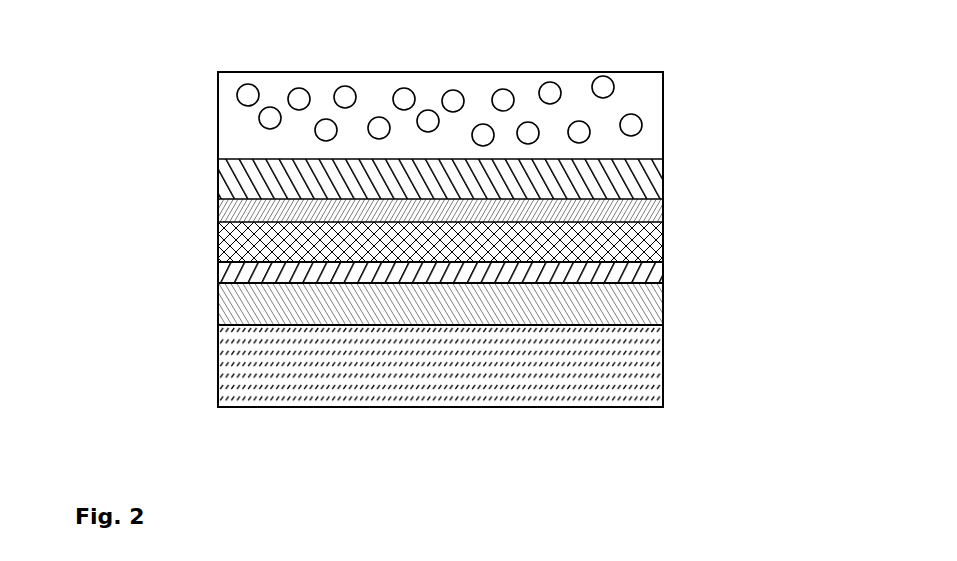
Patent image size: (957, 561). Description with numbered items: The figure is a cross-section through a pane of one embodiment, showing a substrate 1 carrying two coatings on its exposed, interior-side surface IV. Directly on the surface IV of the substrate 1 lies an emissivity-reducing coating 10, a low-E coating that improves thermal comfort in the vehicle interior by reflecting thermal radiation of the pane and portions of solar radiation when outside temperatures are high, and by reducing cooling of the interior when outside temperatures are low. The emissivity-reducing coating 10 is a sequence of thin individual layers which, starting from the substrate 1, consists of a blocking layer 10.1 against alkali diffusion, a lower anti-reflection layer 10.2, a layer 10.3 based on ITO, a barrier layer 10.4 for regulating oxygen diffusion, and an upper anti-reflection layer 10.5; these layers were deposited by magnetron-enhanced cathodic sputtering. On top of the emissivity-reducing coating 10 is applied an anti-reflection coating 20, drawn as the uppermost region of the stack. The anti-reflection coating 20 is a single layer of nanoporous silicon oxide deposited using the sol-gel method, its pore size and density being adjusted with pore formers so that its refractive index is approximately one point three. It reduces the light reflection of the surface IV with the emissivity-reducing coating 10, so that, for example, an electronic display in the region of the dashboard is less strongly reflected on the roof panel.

The anti-reflection coating 20 is at (628, 83).
The emissivity-reducing coating 10 is at (216, 158).
The upper anti-reflection layer 10.5 is at (648, 172).
The barrier layer 10.4 is at (648, 208).
The layer based on ITO 10.3 is at (647, 237).
The lower anti-reflection layer 10.2 is at (648, 269).
The blocking layer 10.1 is at (648, 306).
The substrate 1 is at (550, 390).
The interior-side surface IV is at (642, 334).